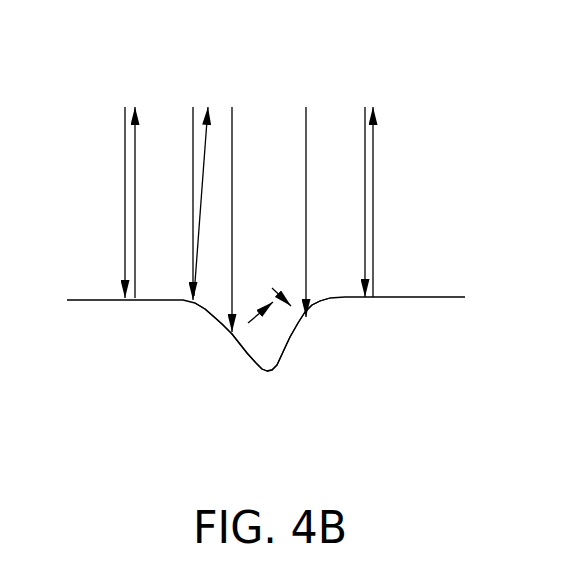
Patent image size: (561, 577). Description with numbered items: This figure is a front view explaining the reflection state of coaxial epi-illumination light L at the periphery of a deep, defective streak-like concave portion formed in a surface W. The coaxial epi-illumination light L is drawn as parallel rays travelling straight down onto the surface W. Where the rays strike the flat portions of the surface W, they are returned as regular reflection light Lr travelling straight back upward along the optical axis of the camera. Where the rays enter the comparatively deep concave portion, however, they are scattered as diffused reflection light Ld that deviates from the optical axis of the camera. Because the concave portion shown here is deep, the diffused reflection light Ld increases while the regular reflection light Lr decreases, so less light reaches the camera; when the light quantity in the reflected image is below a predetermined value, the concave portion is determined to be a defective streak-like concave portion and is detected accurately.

The workpiece surface W is at (428, 318).
The coaxial epi-illumination light L is at (125, 202).
The regular reflection light Lr is at (134, 163).
The diffused reflection light Ld is at (210, 125).